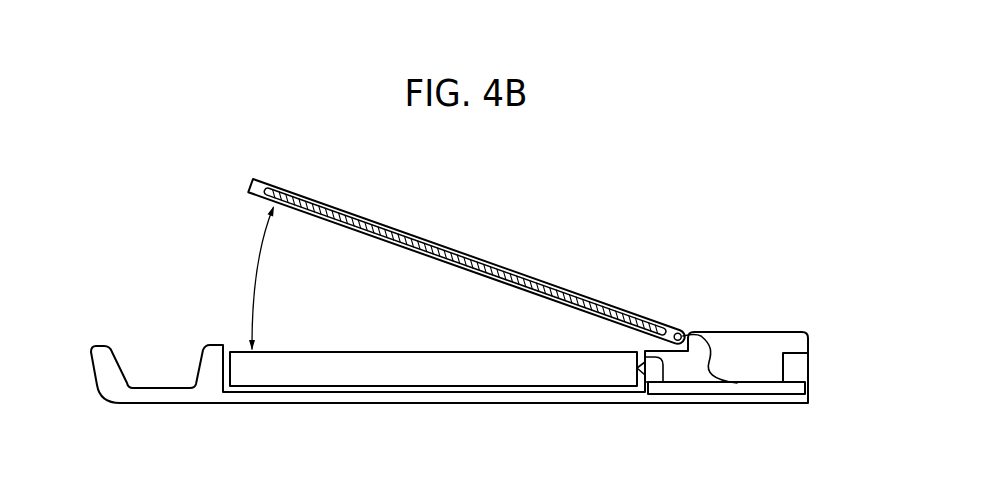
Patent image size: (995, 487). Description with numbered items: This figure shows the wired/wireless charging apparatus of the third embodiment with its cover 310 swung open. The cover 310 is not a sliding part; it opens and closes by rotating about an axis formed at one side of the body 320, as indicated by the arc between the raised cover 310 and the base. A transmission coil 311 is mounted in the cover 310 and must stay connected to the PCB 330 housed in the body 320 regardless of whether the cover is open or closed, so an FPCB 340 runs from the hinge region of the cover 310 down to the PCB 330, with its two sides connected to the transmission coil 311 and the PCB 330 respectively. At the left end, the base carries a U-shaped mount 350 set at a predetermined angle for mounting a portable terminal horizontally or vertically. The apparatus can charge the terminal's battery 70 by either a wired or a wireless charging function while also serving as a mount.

The cover 310 is at (266, 178).
The transmission coil 311 is at (489, 262).
The body 320 is at (797, 341).
The PCB 330 is at (700, 388).
The FPCB 340 is at (716, 352).
The mount 350 is at (158, 399).
The battery 70 is at (387, 377).